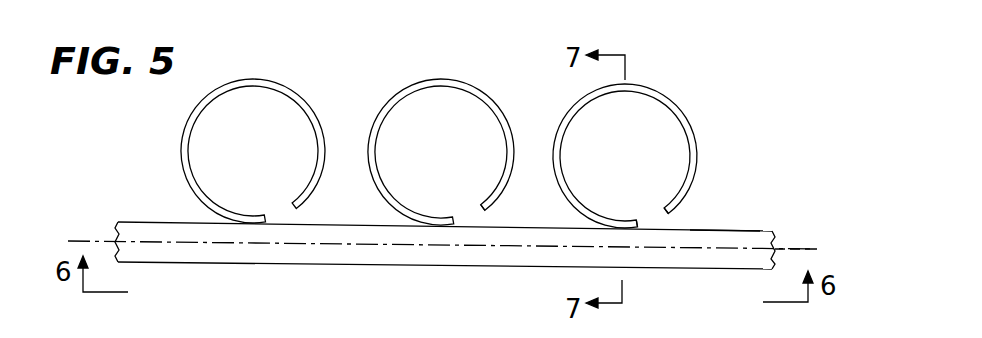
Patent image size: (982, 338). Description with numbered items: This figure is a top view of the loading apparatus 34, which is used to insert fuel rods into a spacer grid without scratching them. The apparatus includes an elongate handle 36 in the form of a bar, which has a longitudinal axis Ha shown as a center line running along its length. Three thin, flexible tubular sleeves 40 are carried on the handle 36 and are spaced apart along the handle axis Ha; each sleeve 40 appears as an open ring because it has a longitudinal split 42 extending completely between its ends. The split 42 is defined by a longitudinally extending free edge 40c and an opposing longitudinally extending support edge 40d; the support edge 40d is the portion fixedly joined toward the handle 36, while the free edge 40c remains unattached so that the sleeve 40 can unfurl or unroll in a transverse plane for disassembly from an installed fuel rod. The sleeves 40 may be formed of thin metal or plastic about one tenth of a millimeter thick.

The loading apparatus 34 is at (755, 226).
The handle 36 is at (703, 229).
The tubular sleeve 40 is at (383, 100).
The longitudinal split 42 is at (480, 204).
The free edge 40c is at (675, 194).
The support edge 40d is at (623, 222).
The handle longitudinal axis Ha is at (793, 248).